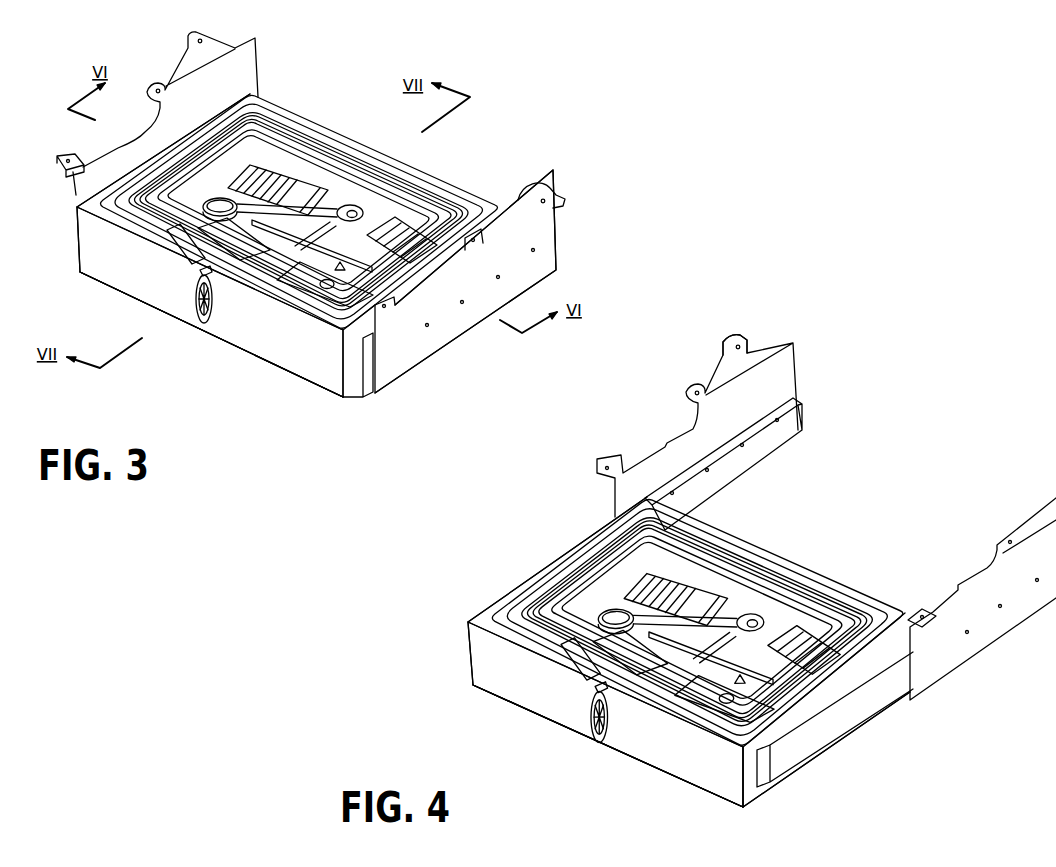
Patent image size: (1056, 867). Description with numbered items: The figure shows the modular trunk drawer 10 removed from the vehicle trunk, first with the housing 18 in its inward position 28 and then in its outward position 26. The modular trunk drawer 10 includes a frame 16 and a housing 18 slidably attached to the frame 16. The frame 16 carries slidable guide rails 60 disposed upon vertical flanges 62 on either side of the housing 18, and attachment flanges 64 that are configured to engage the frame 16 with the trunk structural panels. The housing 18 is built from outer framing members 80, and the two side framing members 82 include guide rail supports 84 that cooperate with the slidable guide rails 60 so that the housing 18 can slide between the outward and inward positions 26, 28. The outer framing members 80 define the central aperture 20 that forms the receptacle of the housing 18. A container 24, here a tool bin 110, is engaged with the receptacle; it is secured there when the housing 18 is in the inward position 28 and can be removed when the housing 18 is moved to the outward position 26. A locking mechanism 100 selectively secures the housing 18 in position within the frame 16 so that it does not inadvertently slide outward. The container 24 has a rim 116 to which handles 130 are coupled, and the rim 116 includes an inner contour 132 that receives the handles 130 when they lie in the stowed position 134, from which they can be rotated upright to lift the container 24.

In FIG. 3, the modular trunk drawer 10 is at (498, 80).
In FIG. 4, the modular trunk drawer 10 is at (980, 345).
In FIG. 3, the frame 16 is at (442, 357).
In FIG. 4, the frame 16 is at (977, 663).
In FIG. 3, the housing 18 is at (213, 337).
In FIG. 4, the housing 18 is at (553, 723).
In FIG. 3, the central aperture 20 is at (82, 196).
In FIG. 4, the central aperture 20 is at (490, 608).
In FIG. 3, the container 24 is at (375, 195).
In FIG. 4, the container 24 is at (763, 605).
In FIG. 4, the outward position 26 is at (465, 700).
In FIG. 3, the inward position 28 is at (90, 287).
In FIG. 4, the slidable guide rail 60 is at (777, 423).
In FIG. 3, the vertical flange 62 is at (540, 262).
In FIG. 4, the vertical flange 62 is at (777, 377).
In FIG. 3, the attachment flange 64 is at (553, 193).
In FIG. 4, the attachment flange 64 is at (750, 352).
In FIG. 3, the outer framing member 80 is at (293, 357).
In FIG. 4, the outer framing member 80 is at (685, 770).
In FIG. 3, the side framing member 82 is at (360, 378).
In FIG. 4, the side framing member 82 is at (750, 792).
In FIG. 4, the guide rail support 84 is at (808, 738).
In FIG. 3, the locking mechanism 100 is at (213, 268).
In FIG. 4, the locking mechanism 100 is at (610, 683).
In FIG. 3, the tool bin 110 is at (210, 193).
In FIG. 4, the tool bin 110 is at (607, 602).
In FIG. 3, the rim 116 is at (133, 227).
In FIG. 4, the rim 116 is at (752, 575).
In FIG. 3, the handle 130 is at (313, 147).
In FIG. 4, the handle 130 is at (717, 547).
In FIG. 3, the inner contour 132 is at (360, 163).
In FIG. 4, the inner contour 132 is at (767, 560).
In FIG. 3, the stowed position 134 is at (477, 185).
In FIG. 4, the stowed position 134 is at (857, 595).